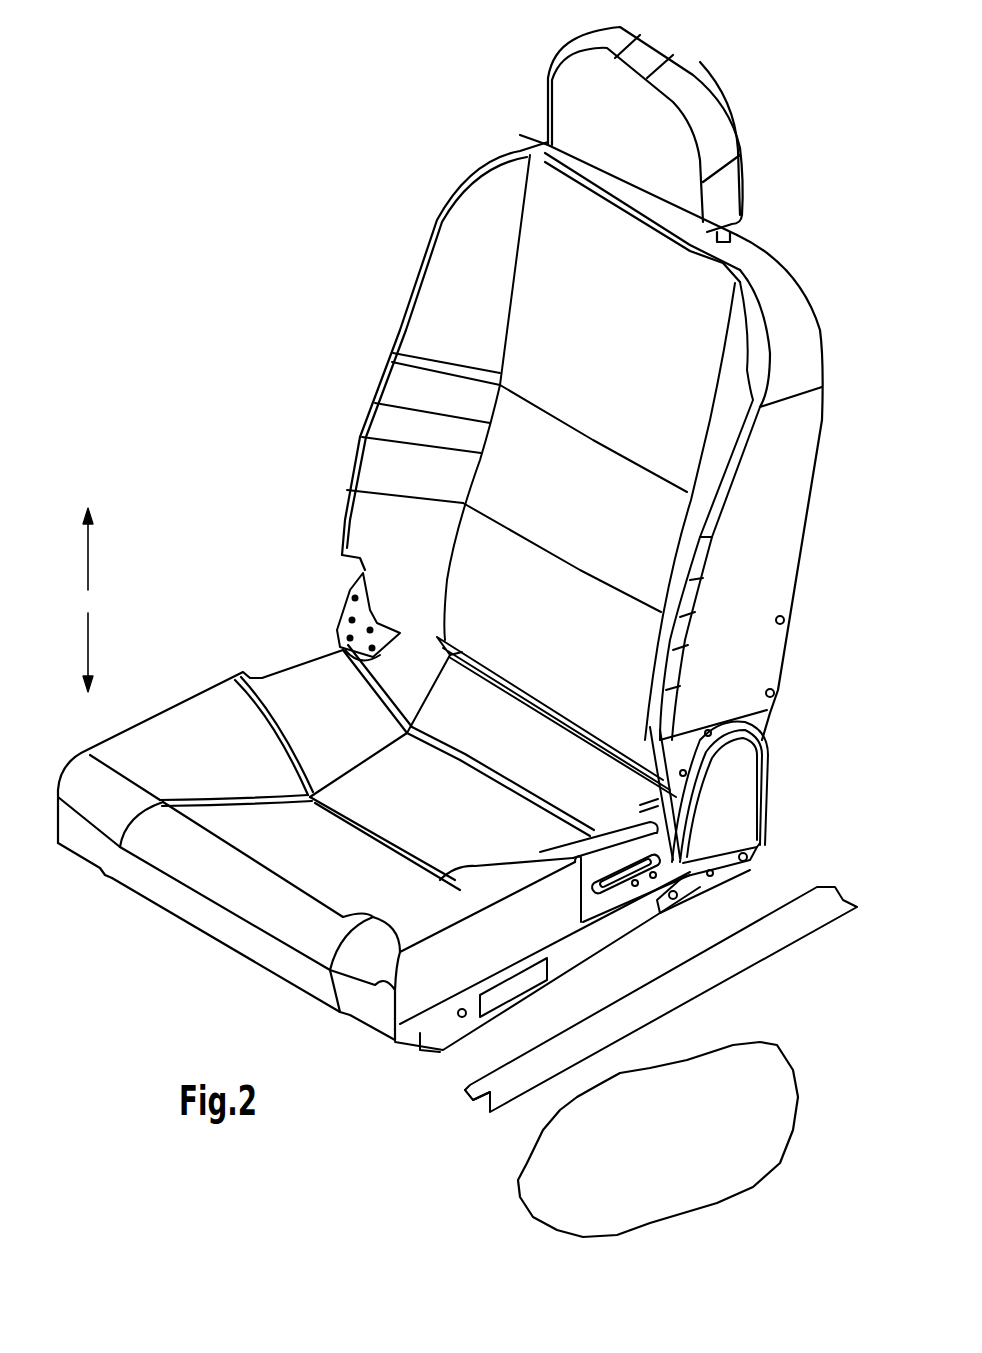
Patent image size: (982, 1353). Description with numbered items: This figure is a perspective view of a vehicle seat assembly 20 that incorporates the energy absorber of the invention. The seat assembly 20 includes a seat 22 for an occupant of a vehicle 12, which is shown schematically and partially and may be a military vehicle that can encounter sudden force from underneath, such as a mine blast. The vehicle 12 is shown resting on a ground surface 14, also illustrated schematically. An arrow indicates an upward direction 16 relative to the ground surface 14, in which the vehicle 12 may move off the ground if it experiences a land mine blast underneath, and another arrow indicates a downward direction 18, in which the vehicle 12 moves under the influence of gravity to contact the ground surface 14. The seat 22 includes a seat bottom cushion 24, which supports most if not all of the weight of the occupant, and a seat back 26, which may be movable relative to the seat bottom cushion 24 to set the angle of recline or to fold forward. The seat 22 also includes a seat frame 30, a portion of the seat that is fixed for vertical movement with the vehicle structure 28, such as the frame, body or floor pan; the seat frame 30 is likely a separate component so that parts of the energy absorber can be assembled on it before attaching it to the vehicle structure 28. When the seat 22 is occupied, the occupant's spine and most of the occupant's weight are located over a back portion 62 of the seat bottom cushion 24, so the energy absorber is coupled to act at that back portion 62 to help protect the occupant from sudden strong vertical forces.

The vehicle 12 is at (745, 976).
The ground surface 14 is at (671, 1162).
The upward direction 16 is at (102, 549).
The downward direction 18 is at (102, 652).
The seat assembly 20 is at (300, 325).
The seat 22 is at (330, 457).
The seat bottom cushion 24 is at (200, 690).
The seat back 26 is at (420, 257).
The vehicle structure 28 is at (497, 1093).
The seat frame 30 is at (585, 948).
The back portion of the seat bottom cushion 62 is at (560, 783).